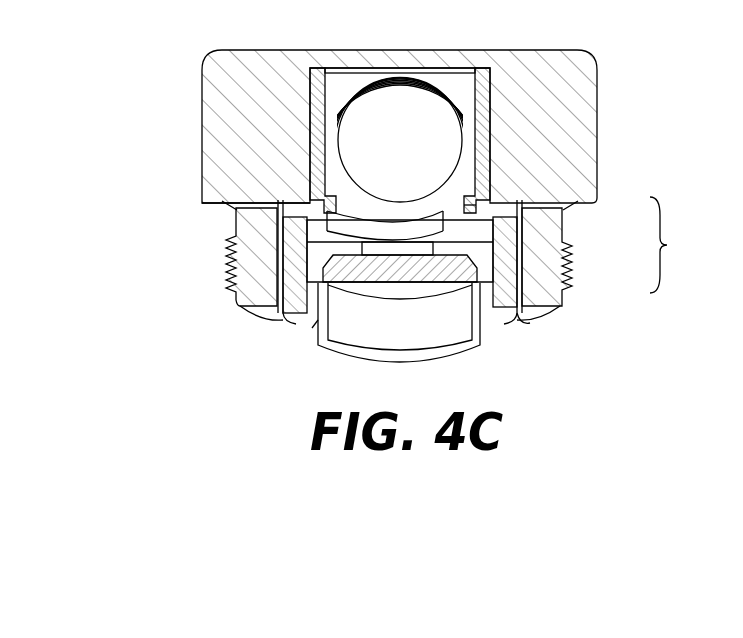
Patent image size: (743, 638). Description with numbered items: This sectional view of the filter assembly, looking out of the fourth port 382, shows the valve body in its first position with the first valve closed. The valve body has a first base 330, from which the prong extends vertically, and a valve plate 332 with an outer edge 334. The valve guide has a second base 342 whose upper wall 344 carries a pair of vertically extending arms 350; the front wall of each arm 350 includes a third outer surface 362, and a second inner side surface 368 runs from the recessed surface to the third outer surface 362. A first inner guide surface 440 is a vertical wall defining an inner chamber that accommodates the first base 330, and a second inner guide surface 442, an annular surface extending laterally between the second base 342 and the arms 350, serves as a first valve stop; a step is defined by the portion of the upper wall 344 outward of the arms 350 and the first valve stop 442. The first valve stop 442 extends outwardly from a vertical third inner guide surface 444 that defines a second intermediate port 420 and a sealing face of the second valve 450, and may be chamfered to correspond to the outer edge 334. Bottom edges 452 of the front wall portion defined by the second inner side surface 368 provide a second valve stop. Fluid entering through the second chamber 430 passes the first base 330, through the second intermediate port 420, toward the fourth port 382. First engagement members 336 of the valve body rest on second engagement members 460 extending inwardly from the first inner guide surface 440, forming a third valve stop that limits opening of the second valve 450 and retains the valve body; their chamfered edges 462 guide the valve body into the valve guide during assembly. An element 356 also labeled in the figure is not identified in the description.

The first base 330 is at (403, 365).
The valve plate 332 is at (470, 253).
The outer edge 334 is at (563, 298).
The first engagement members 336 is at (520, 318).
The second base 342 is at (312, 331).
The upper wall 344 is at (297, 198).
The arms 350 is at (480, 82).
The sleeve 356 is at (466, 72).
The third outer surface 362 is at (492, 133).
The second inner side surface 368 is at (420, 120).
The fourth port 382 is at (410, 95).
The second intermediate port 420 is at (403, 231).
The second chamber 430 is at (276, 269).
The first inner guide surface 440 is at (321, 252).
The second inner guide surface 442 is at (325, 221).
The third inner guide surface 444 is at (230, 217).
The second valve 450 is at (513, 258).
The bottom edges 452 is at (475, 204).
The second engagement members 460 is at (243, 307).
The chamfered edges 462 is at (280, 318).